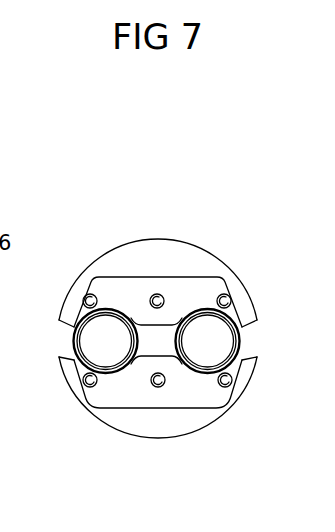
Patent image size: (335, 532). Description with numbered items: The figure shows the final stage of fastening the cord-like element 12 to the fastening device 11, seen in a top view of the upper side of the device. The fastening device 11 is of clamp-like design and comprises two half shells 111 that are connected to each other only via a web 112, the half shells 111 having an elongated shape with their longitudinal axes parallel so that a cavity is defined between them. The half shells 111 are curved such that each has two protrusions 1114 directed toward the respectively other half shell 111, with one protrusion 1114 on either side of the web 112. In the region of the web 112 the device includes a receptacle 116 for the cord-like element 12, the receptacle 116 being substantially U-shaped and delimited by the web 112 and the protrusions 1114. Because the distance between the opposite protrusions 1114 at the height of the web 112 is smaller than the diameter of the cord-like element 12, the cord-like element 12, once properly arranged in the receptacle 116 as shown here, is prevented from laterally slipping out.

The fastening device 11 is at (183, 188).
The half shells 111 is at (210, 253).
The protrusions 1114 is at (59, 321).
The web 112 is at (157, 333).
The receptacle 116 is at (107, 311).
The cord-like element 12 is at (93, 335).